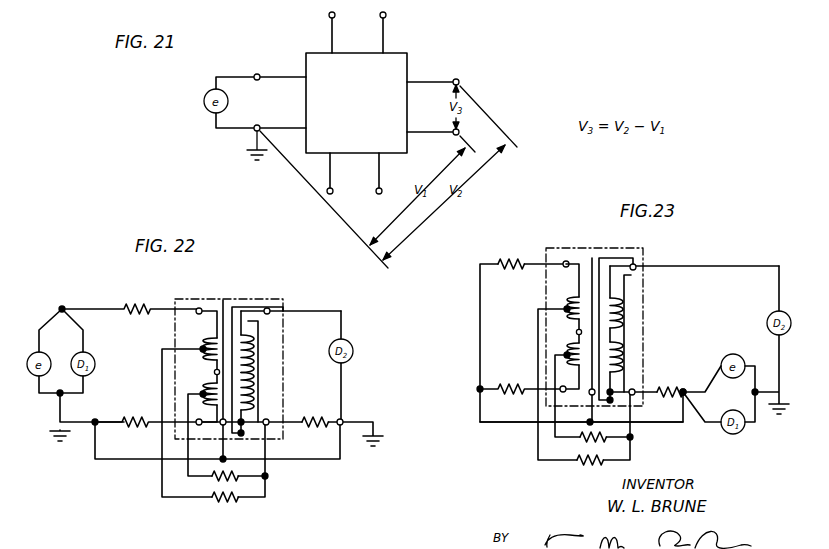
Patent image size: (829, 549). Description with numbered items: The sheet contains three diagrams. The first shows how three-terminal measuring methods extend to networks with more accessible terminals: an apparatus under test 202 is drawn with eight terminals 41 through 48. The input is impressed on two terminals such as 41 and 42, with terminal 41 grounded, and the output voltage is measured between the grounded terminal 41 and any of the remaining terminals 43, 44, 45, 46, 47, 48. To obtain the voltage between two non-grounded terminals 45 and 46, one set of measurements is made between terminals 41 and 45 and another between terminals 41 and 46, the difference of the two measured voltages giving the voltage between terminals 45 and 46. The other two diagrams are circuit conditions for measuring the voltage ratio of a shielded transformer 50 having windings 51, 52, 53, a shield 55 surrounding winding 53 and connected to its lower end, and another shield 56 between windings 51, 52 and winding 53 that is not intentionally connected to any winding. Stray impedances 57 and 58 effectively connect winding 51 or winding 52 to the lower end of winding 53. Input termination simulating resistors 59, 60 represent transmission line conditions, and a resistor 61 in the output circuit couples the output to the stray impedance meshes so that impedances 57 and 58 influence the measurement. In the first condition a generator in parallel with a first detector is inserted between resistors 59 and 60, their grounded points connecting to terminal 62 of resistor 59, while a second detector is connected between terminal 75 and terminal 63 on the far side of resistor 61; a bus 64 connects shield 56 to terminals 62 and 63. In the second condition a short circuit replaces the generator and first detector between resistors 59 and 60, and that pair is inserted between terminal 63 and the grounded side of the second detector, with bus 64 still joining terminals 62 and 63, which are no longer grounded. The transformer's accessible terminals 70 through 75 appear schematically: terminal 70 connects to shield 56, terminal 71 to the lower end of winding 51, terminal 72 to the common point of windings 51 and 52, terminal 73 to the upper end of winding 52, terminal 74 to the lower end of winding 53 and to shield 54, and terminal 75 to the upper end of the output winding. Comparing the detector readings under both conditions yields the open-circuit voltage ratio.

In FIG. 21, the terminal 41 is at (259, 125).
In FIG. 21, the terminal 42 is at (258, 74).
In FIG. 21, the terminal 43 is at (329, 15).
In FIG. 21, the terminal 44 is at (386, 15).
In FIG. 21, the terminal 45 is at (458, 79).
In FIG. 21, the terminal 46 is at (459, 132).
In FIG. 21, the terminal 47 is at (382, 189).
In FIG. 21, the terminal 48 is at (333, 191).
In FIG. 21, the apparatus under test 202 is at (409, 58).
In FIG. 22, the transformer 50 is at (197, 297).
In FIG. 23, the transformer 50 is at (553, 250).
In FIG. 22, the winding 51 is at (208, 386).
In FIG. 23, the winding 51 is at (567, 355).
In FIG. 22, the winding 52 is at (208, 341).
In FIG. 23, the winding 52 is at (568, 312).
In FIG. 22, the winding 53 is at (257, 388).
In FIG. 23, the winding 53 is at (622, 358).
In FIG. 23, the shield 54 is at (626, 290).
In FIG. 22, the shield 55 is at (258, 356).
In FIG. 23, the shield 55 is at (616, 313).
In FIG. 22, the shield 56 is at (222, 308).
In FIG. 22, the stray impedance 57 is at (238, 484).
In FIG. 23, the stray impedance 57 is at (633, 437).
In FIG. 22, the stray impedance 58 is at (212, 501).
In FIG. 23, the stray impedance 58 is at (588, 455).
In FIG. 22, the input termination simulating resistor 59 is at (135, 430).
In FIG. 23, the input termination simulating resistor 59 is at (505, 392).
In FIG. 22, the input termination simulating resistor 60 is at (140, 300).
In FIG. 23, the input termination simulating resistor 60 is at (509, 257).
In FIG. 22, the resistor 61 is at (310, 428).
In FIG. 23, the resistor 61 is at (662, 395).
In FIG. 22, the terminal 62 is at (96, 418).
In FIG. 23, the terminal 62 is at (478, 387).
In FIG. 22, the terminal 63 is at (344, 419).
In FIG. 23, the terminal 63 is at (688, 377).
In FIG. 22, the bus 64 is at (342, 452).
In FIG. 23, the bus 64 is at (670, 425).
In FIG. 23, the terminal 70 is at (589, 395).
In FIG. 23, the terminal 71 is at (556, 377).
In FIG. 22, the terminal 72 is at (212, 372).
In FIG. 23, the terminal 72 is at (576, 333).
In FIG. 23, the terminal 73 is at (564, 267).
In FIG. 23, the terminal 74 is at (636, 391).
In FIG. 22, the terminal 75 is at (269, 309).
In FIG. 23, the terminal 75 is at (636, 265).